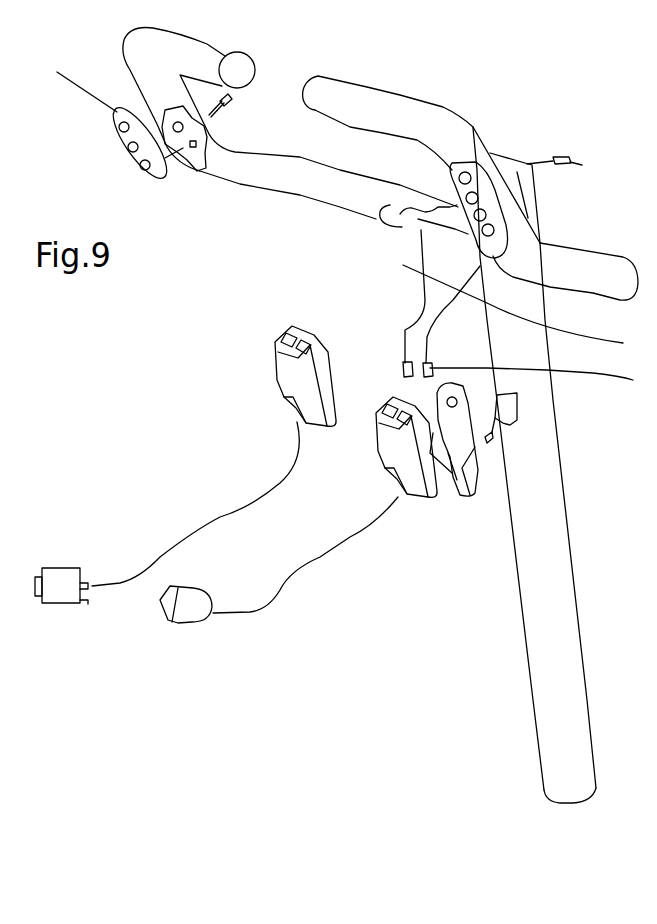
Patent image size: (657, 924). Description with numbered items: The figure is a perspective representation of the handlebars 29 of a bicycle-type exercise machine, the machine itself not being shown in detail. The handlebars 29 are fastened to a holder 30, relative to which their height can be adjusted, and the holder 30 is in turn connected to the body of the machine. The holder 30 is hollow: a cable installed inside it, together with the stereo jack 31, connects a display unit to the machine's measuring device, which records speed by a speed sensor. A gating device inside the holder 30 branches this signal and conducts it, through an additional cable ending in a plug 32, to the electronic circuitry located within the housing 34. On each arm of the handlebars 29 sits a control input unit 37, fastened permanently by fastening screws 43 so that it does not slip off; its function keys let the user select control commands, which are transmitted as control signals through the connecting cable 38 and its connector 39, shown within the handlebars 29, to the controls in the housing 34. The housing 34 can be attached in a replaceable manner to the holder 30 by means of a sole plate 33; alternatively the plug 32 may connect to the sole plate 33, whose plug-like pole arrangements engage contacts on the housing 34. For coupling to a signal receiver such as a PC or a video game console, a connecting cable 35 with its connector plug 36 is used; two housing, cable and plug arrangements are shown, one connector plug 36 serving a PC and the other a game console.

The handlebars 29 is at (350, 93).
The holder 30 is at (568, 783).
The stereo jack 31 is at (562, 157).
The plug 32 is at (487, 447).
The sole plate 33 is at (459, 480).
The housing 34 is at (287, 380).
The connecting cable 35 is at (183, 537).
The connector plug 36 is at (62, 597).
The control input unit 37 is at (473, 130).
The connecting cable 38 is at (403, 265).
The connector 39 is at (403, 360).
The fastening screws 43 is at (240, 102).